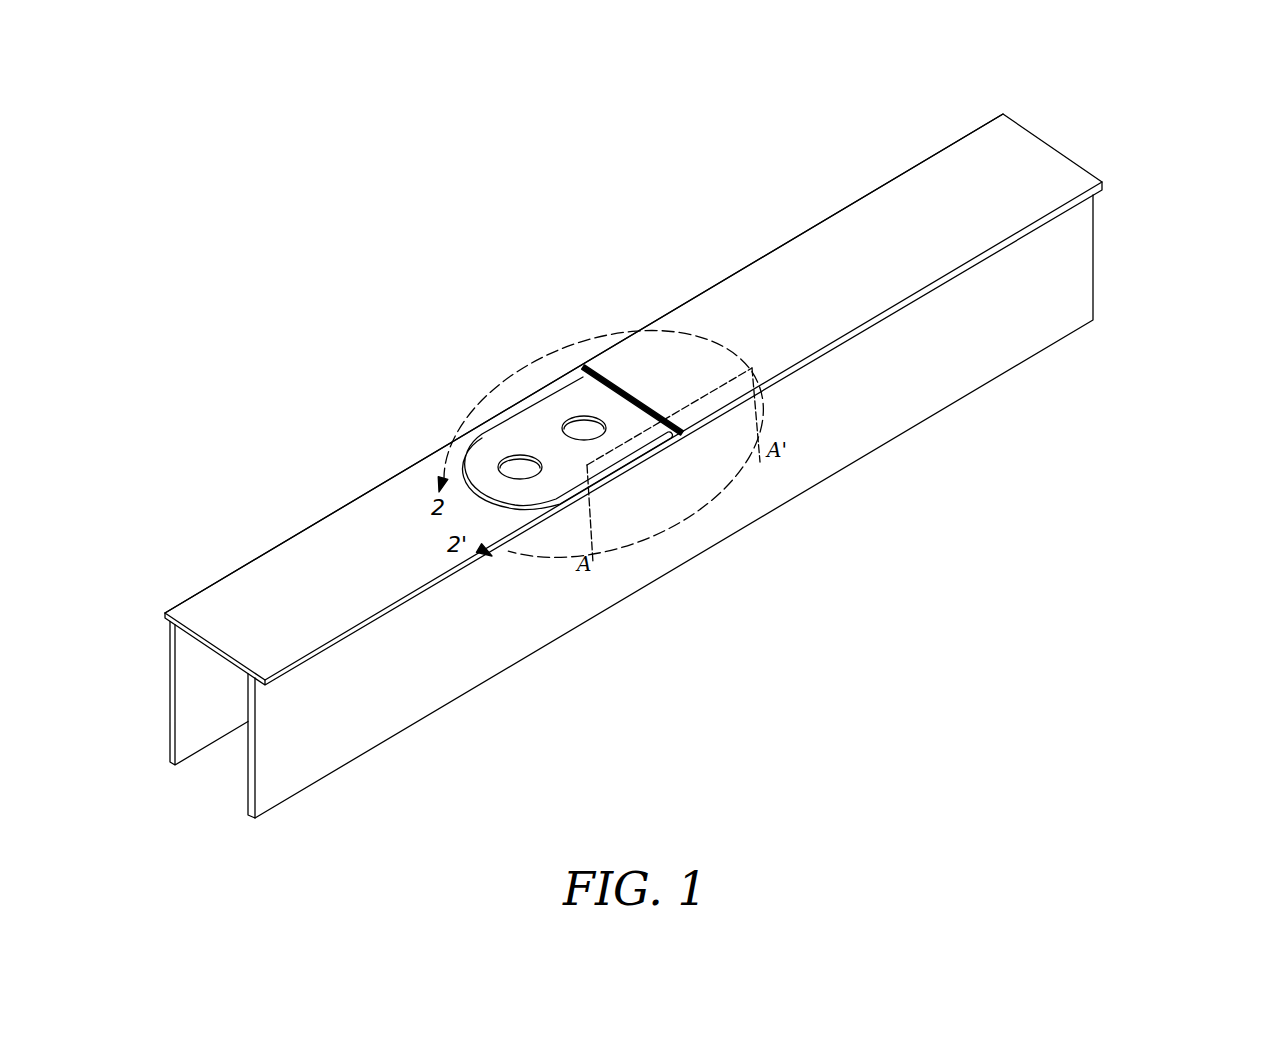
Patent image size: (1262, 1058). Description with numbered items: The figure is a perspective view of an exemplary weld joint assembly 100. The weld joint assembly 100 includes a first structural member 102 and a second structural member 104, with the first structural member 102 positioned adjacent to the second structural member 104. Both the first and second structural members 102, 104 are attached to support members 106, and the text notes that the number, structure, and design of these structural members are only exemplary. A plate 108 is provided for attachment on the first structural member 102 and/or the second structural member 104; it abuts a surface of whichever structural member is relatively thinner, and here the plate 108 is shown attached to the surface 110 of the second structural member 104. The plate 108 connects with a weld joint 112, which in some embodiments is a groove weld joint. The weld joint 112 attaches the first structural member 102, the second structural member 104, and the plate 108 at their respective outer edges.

The weld joint assembly 100 is at (701, 441).
The first structural member 102 is at (805, 250).
The second structural member 104 is at (387, 505).
The support members 106 is at (183, 739).
The plate 108 is at (532, 422).
The surface 110 is at (362, 595).
The weld joint 112 is at (586, 365).